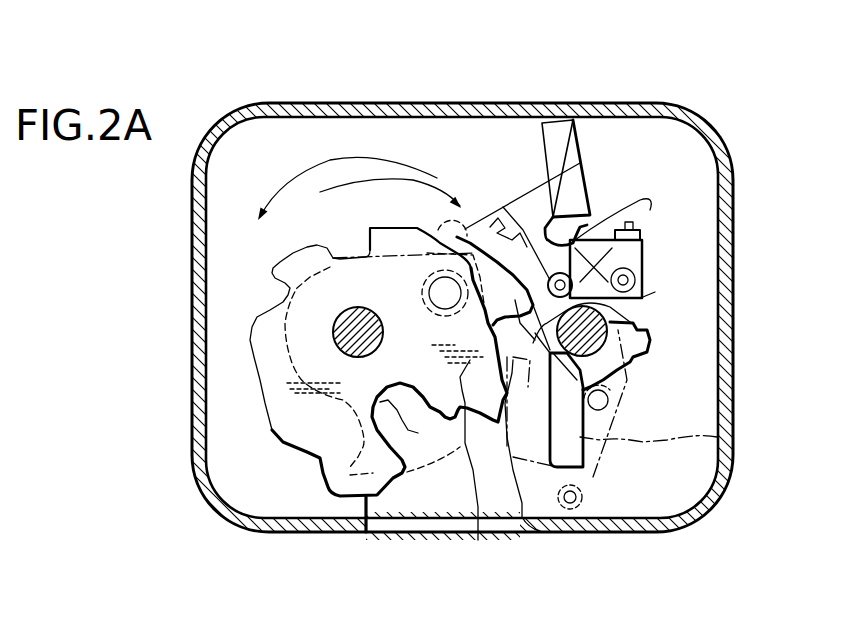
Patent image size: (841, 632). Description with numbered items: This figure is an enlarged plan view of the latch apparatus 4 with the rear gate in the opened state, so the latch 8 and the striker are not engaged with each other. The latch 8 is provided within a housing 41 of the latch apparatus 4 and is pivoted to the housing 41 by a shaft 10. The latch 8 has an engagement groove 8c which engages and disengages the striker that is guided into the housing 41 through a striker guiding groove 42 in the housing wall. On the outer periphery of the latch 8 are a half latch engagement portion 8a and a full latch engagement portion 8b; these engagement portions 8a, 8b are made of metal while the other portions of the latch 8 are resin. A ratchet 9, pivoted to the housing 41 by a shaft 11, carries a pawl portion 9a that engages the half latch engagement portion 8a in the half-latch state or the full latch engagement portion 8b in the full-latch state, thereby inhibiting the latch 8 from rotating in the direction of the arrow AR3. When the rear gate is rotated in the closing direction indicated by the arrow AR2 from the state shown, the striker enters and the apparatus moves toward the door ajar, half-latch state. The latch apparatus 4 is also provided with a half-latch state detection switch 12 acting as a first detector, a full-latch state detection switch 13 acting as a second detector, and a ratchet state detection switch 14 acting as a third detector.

The latch apparatus 4 is at (420, 95).
The housing 41 is at (301, 107).
The striker guiding groove 42 is at (400, 523).
The latch 8 is at (258, 388).
The half latch engagement portion 8a is at (583, 346).
The full latch engagement portion 8b is at (478, 540).
The engagement groove 8c is at (422, 432).
The ratchet 9 is at (633, 318).
The pawl portion 9a is at (467, 227).
The shaft 10 is at (357, 310).
The shaft 11 is at (610, 325).
The half-latch state detection switch 12 is at (717, 437).
The full-latch state detection switch 13 is at (583, 222).
The ratchet state detection switch 14 is at (643, 297).
The arrow AR2 is at (353, 160).
The arrow AR3 is at (462, 222).